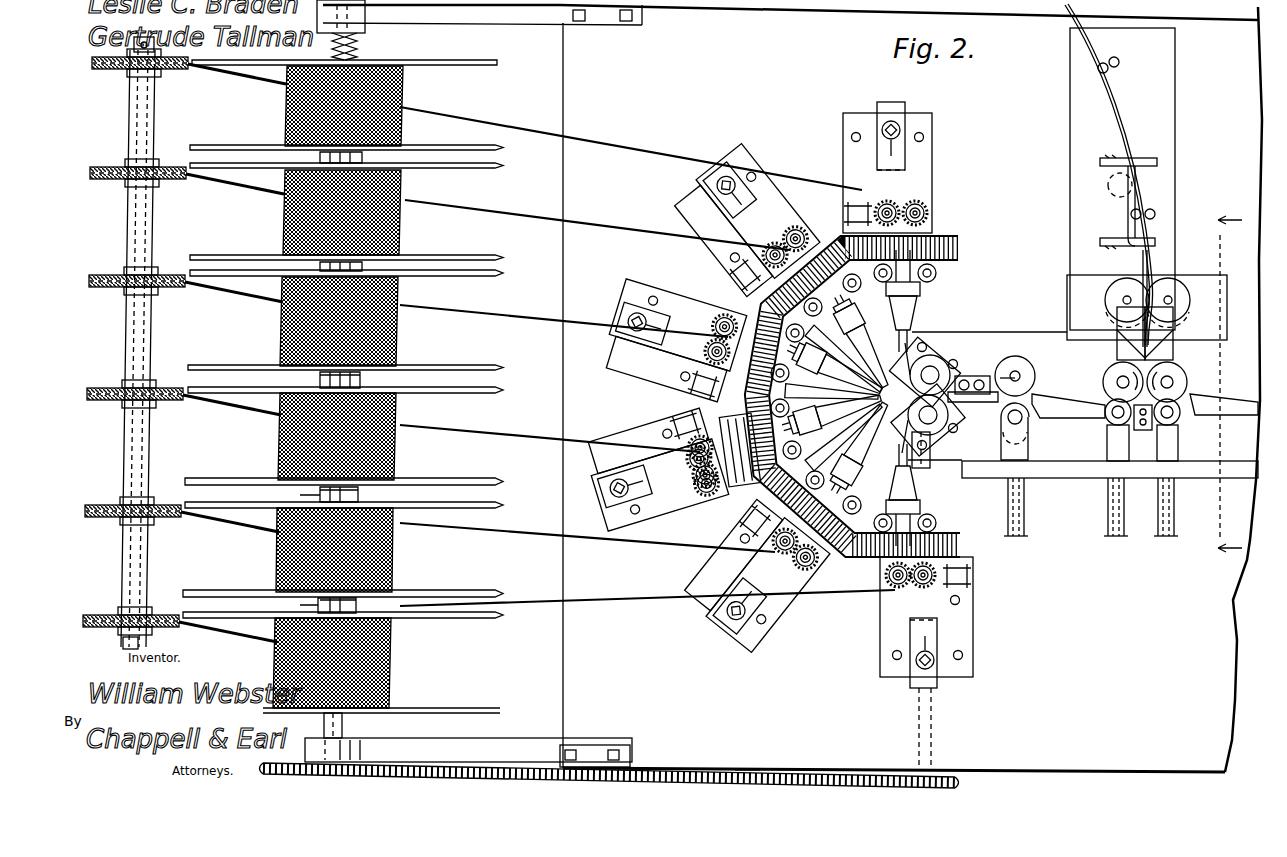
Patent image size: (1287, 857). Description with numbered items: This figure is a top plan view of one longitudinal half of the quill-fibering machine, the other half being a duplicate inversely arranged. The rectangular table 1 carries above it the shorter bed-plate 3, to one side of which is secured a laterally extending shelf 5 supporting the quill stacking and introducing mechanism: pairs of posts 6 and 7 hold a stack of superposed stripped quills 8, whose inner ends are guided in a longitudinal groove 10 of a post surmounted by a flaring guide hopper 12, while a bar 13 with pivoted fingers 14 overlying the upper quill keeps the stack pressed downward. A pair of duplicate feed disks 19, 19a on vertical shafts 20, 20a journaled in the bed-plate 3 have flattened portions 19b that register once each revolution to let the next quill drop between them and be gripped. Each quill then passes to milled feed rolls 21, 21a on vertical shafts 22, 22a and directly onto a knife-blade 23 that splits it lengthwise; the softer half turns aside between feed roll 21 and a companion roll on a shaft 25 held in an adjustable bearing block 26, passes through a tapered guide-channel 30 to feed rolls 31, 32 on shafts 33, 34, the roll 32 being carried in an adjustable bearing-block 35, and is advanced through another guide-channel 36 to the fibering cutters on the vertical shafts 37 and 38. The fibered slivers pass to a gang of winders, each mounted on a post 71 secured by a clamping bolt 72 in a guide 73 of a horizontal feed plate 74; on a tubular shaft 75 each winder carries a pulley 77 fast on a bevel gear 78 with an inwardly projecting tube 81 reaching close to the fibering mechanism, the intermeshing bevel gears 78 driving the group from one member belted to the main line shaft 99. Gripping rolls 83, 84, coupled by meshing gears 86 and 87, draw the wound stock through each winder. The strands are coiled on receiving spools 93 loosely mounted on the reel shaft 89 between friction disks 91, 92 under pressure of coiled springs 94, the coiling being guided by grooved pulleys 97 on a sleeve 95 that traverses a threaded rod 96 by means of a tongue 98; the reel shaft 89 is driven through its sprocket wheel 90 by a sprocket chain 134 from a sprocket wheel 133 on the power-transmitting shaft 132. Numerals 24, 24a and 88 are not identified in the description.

The table 1 is at (792, 388).
The bed-plate 3 is at (1000, 338).
The shelf 5 is at (1068, 224).
The post 6 is at (1156, 212).
The post 7 is at (1120, 62).
The stripped quills 8 is at (1130, 106).
The longitudinal groove 10 is at (1140, 331).
The guide hopper 12 is at (1168, 337).
The bar 13 is at (1125, 206).
The pivoted fingers 14 is at (1150, 160).
The feed disk 19 is at (1115, 312).
The feed disk 19a is at (1188, 312).
The flattened portions 19b is at (1118, 295).
The shaft 20 is at (1112, 297).
The shaft 20a is at (1185, 298).
The feed roll 21 is at (1118, 378).
The feed roll 21a is at (1173, 380).
The vertical shaft 22 is at (1110, 375).
The vertical shaft 22a is at (1177, 375).
The knife-blade 23 is at (1112, 382).
The standard 24 is at (1119, 443).
The standard 24a is at (1171, 430).
The shaft 25 is at (1112, 420).
The adjustable bearing block 26 is at (1117, 433).
The tubular tapered guide-channel 30 is at (1045, 420).
The feed roll 31 is at (1005, 370).
The feed roll 32 is at (1003, 425).
The vertical shaft 33 is at (972, 375).
The vertical shaft 34 is at (1008, 414).
The adjustable bearing-block 35 is at (1001, 445).
The tubular tapered guide-channel 36 is at (973, 415).
The vertical shaft 37 is at (935, 357).
The vertical shaft 38 is at (928, 470).
The post 71 is at (785, 537).
The clamping bolt 72 is at (715, 186).
The guide 73 is at (695, 210).
The horizontal feed plate 74 is at (712, 247).
The tubular shaft 75 is at (760, 307).
The pulley 77 is at (725, 412).
The bevel gear 78 is at (935, 246).
The tube 81 is at (833, 418).
The gripping roll 83 is at (680, 450).
The gripping roll 84 is at (677, 512).
The gear 86 is at (698, 445).
The gear 87 is at (695, 478).
The frame bar 88 is at (505, 20).
The reel shaft 89 is at (322, 728).
The sprocket wheel 90 is at (449, 750).
The friction disk 91 is at (300, 492).
The friction disk 92 is at (360, 492).
The receiving spool 93 is at (500, 380).
The coiled spring 94 is at (372, 381).
The sleeve 95 is at (150, 462).
The rod 96 is at (140, 643).
The grooved pulleys 97 is at (170, 385).
The tongue 98 is at (156, 45).
The main line shaft 99 is at (830, 458).
The power-transmitting shaft 132 is at (935, 722).
The sprocket wheel 133 is at (962, 784).
The sprocket chain 134 is at (735, 772).